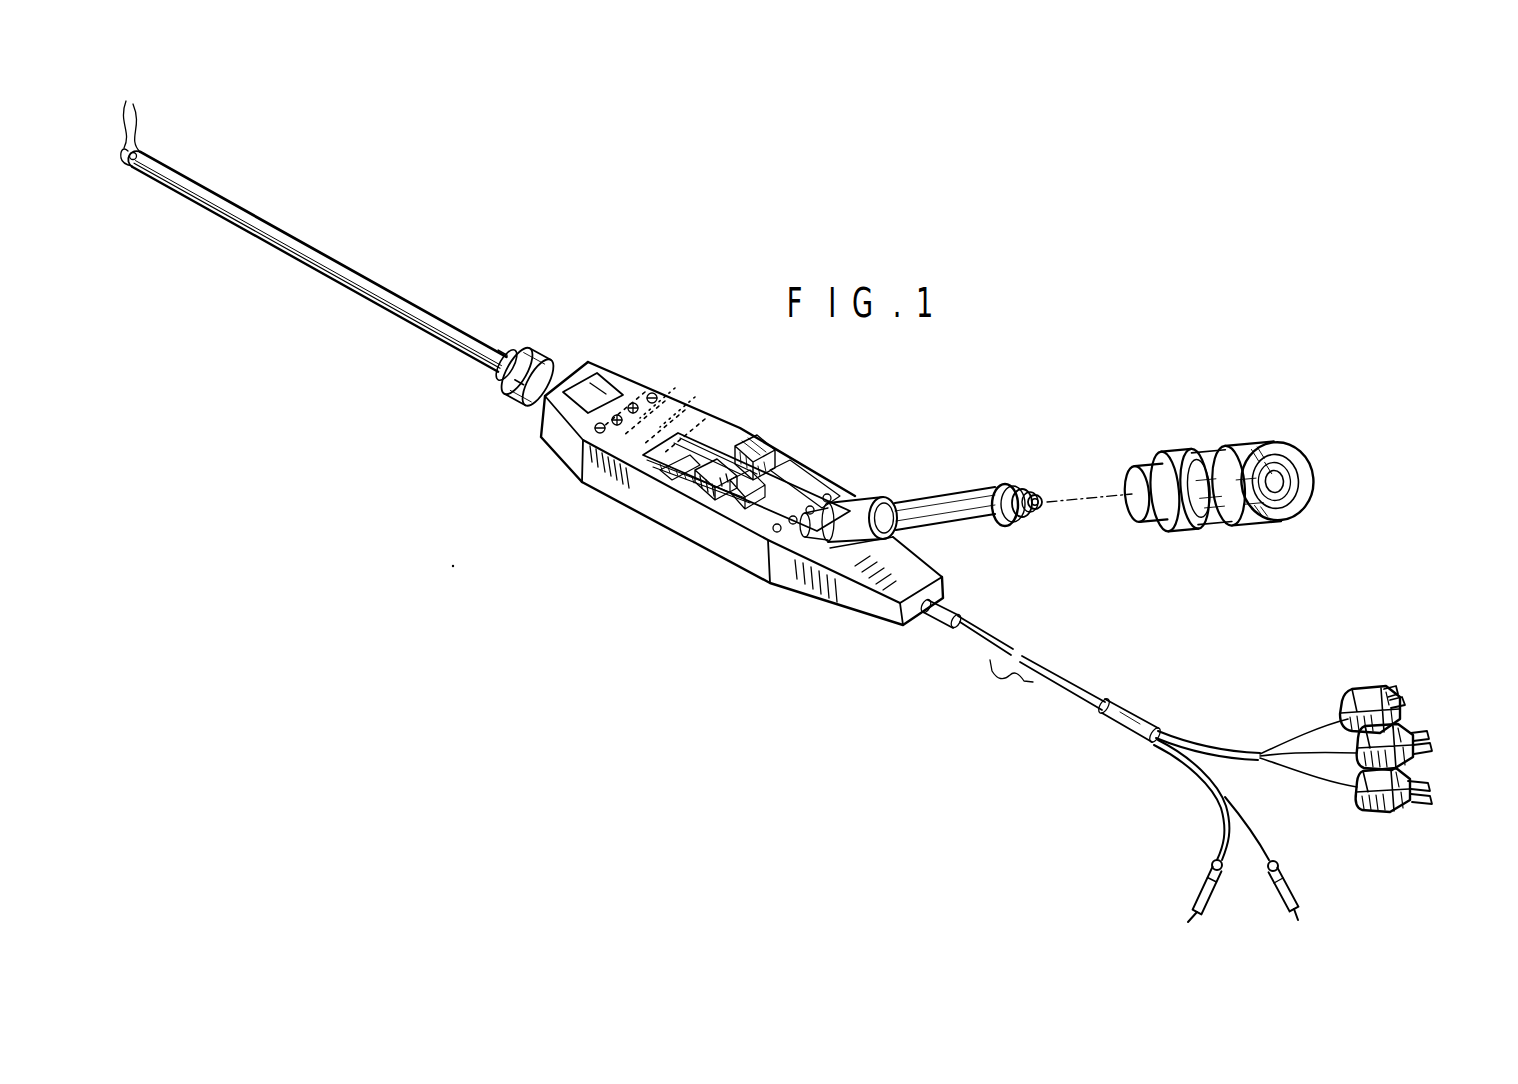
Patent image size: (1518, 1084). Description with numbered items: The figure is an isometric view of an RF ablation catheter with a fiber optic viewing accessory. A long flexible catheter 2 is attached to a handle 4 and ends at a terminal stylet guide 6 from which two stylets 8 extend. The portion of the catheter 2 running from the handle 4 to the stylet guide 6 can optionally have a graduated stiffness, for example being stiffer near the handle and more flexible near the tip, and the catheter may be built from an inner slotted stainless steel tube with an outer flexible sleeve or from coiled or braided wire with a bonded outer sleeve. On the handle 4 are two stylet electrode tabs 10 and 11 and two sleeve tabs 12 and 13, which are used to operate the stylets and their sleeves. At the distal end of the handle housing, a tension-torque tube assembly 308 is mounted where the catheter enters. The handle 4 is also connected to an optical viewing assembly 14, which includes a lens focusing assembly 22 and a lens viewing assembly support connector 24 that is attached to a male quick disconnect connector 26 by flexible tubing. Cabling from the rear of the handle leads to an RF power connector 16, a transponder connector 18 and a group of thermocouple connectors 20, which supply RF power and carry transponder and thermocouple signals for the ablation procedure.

The flexible catheter 2 is at (354, 267).
The handle 4 is at (706, 402).
The stylet guide 6 is at (166, 142).
The stylets 8 is at (130, 111).
The stylet electrode tab 10 is at (758, 483).
The stylet electrode tab 11 is at (827, 487).
The sleeve tab 12 is at (697, 493).
The sleeve tab 13 is at (758, 468).
The optical viewing assembly 14 is at (962, 474).
The RF power connector 16 is at (1200, 883).
The transponder connector 18 is at (1297, 893).
The thermocouple connectors 20 is at (1400, 708).
The lens focusing assembly 22 is at (1227, 440).
The lens viewing assembly support connector 24 is at (879, 490).
The male quick disconnect connector 26 is at (1014, 484).
The tension-torque tube assembly 308 is at (563, 358).